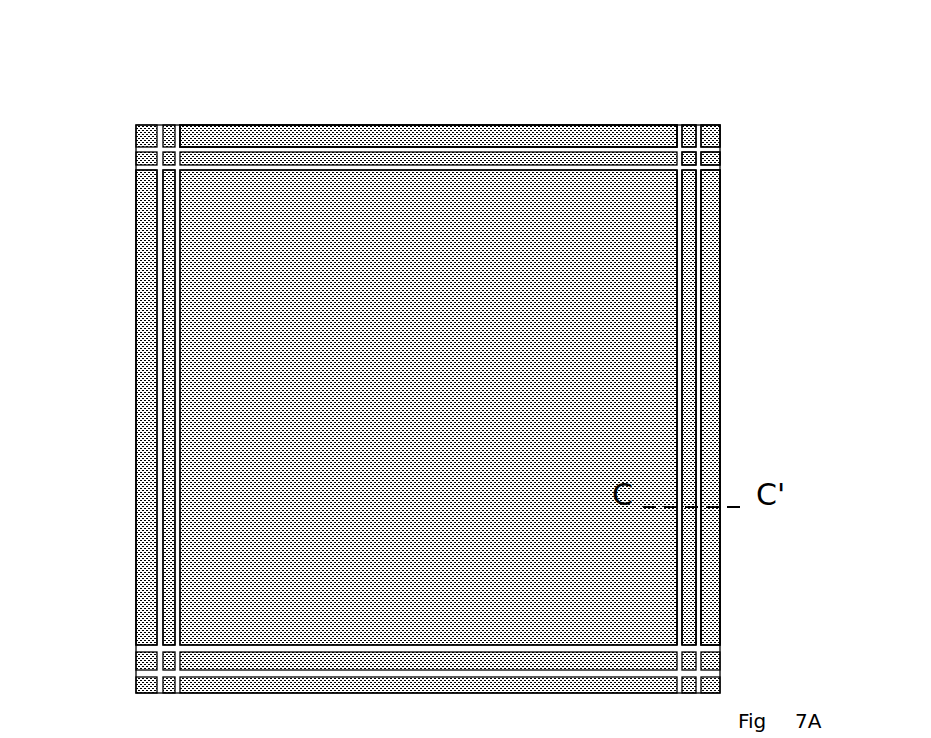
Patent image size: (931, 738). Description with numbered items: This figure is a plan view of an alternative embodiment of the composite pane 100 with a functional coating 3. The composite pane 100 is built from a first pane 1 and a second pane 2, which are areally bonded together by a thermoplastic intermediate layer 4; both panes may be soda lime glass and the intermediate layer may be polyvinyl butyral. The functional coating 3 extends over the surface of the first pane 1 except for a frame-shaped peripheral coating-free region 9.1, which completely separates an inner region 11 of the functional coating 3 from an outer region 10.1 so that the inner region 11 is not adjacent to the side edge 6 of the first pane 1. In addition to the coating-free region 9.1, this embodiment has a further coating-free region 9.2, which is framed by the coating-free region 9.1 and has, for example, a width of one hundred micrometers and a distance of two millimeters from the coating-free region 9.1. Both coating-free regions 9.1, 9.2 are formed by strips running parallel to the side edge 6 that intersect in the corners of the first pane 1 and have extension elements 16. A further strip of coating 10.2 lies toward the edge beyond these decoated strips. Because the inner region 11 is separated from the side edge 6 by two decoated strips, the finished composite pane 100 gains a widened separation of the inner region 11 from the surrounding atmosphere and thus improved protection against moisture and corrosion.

The composite pane 100 is at (143, 80).
The functional coating 3 is at (148, 205).
The first pane 1 is at (650, 127).
The second pane 2 is at (428, 136).
The thermoplastic intermediate layer 4 is at (428, 136).
The extension elements 16 is at (702, 130).
The side edge 6 is at (724, 213).
The inner region 11 is at (665, 222).
The outer region 10.1 is at (688, 275).
The outer frame strip 10.2 is at (708, 338).
The coating-free region 9.2 is at (698, 392).
The coating-free region 9.1 is at (678, 423).